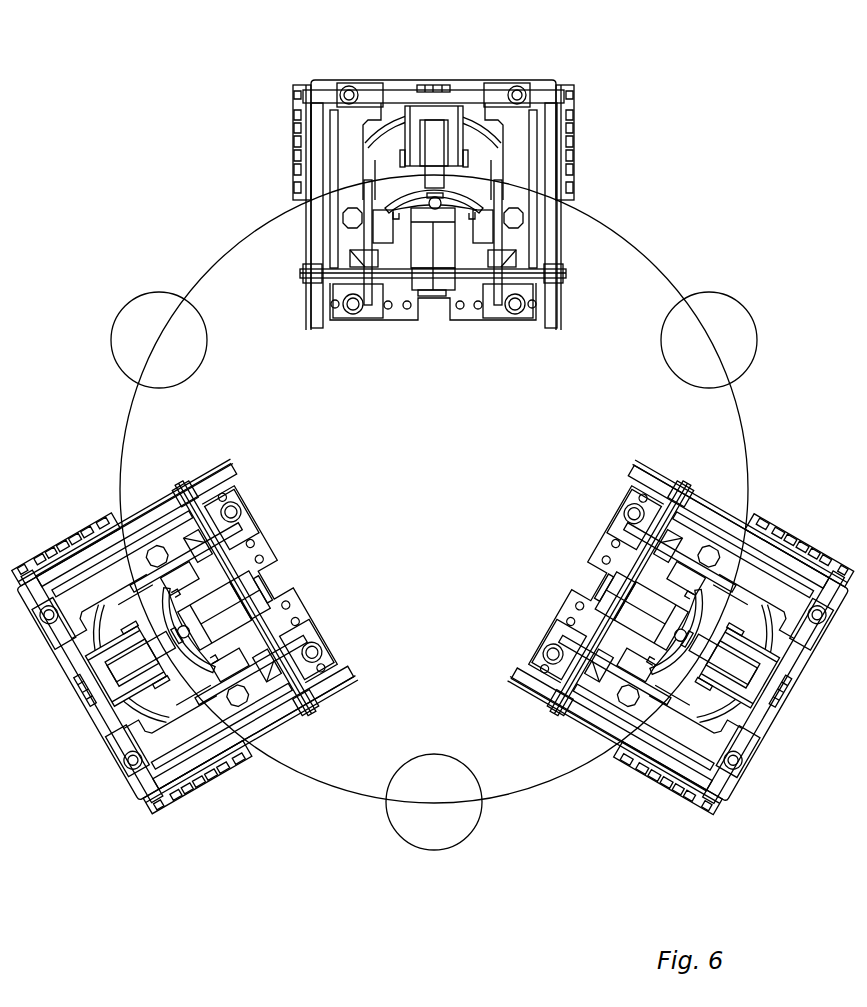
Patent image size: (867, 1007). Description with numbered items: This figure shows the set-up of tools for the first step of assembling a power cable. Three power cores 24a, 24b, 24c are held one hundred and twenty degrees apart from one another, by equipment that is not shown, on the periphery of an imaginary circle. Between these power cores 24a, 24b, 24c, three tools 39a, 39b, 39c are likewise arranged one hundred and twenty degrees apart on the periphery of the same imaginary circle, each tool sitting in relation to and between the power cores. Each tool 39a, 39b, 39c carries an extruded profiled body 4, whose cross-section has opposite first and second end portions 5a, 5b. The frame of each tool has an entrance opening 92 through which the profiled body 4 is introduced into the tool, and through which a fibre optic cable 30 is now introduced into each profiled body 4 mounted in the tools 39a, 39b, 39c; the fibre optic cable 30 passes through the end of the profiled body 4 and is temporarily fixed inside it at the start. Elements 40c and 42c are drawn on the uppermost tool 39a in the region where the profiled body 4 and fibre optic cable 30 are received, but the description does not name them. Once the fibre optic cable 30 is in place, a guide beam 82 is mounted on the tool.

The profiled body 4 is at (480, 187).
The first end portion 5a is at (382, 190).
The second end portion 5b is at (487, 197).
The power core 24a is at (150, 293).
The power core 24b is at (727, 295).
The power core 24c is at (433, 850).
The fibre optic cable 30 is at (403, 195).
The tool 39a is at (428, 342).
The tool 39b is at (569, 527).
The tool 39c is at (297, 537).
The first clamp block 40c is at (377, 203).
The second clamp block 42c is at (487, 200).
The guide beam 82 is at (438, 293).
The entrance opening 92 is at (488, 143).